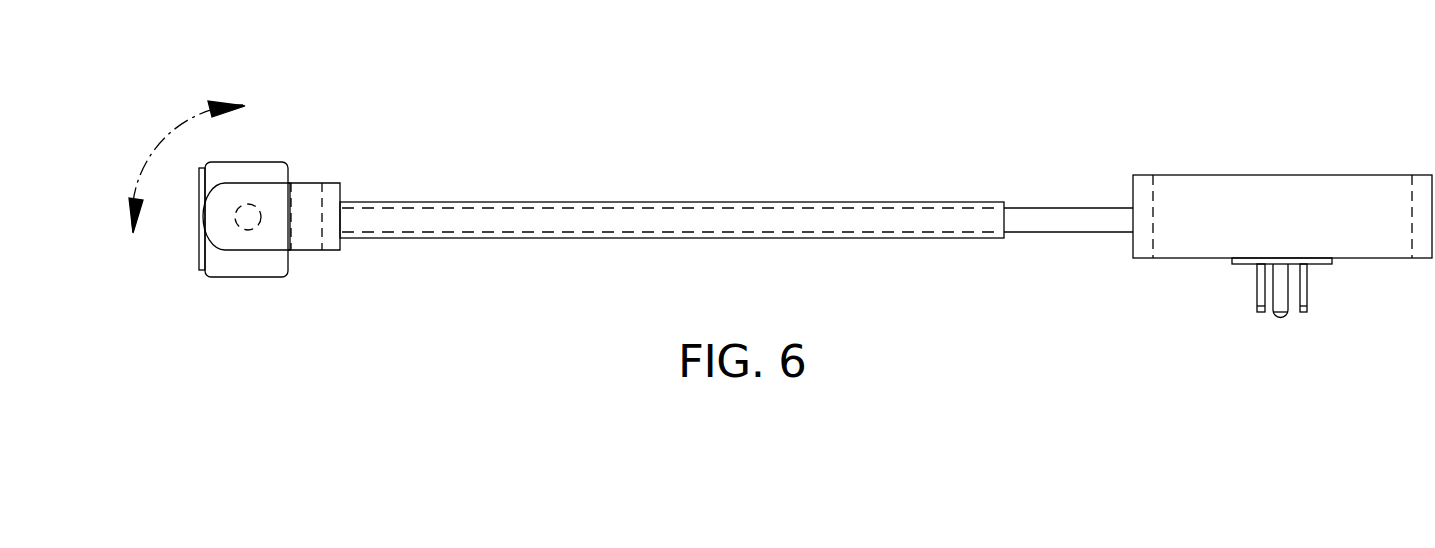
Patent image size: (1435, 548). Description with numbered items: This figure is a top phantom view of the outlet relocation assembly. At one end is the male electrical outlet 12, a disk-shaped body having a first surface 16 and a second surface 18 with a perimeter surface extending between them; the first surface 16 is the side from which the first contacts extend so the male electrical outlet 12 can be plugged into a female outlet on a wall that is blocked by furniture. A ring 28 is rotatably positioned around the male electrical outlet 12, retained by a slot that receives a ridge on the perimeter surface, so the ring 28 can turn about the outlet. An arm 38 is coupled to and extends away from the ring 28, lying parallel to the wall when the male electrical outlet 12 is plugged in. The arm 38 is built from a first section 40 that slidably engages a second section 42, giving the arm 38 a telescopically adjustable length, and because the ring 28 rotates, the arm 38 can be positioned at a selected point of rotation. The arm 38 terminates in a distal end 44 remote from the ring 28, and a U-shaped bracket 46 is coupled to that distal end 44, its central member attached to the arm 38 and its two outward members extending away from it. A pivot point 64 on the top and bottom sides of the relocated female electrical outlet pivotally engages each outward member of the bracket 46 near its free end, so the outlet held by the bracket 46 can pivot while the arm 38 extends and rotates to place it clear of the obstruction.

The male electrical outlet 12 is at (1379, 120).
The first surface 16 is at (1178, 258).
The second surface 18 is at (1283, 175).
The ring 28 is at (1373, 230).
The arm 38 is at (808, 203).
The first section 40 is at (1086, 172).
The second section 42 is at (489, 172).
The distal end 44 is at (340, 215).
The bracket 46 is at (340, 185).
The pivot point 64 is at (245, 212).